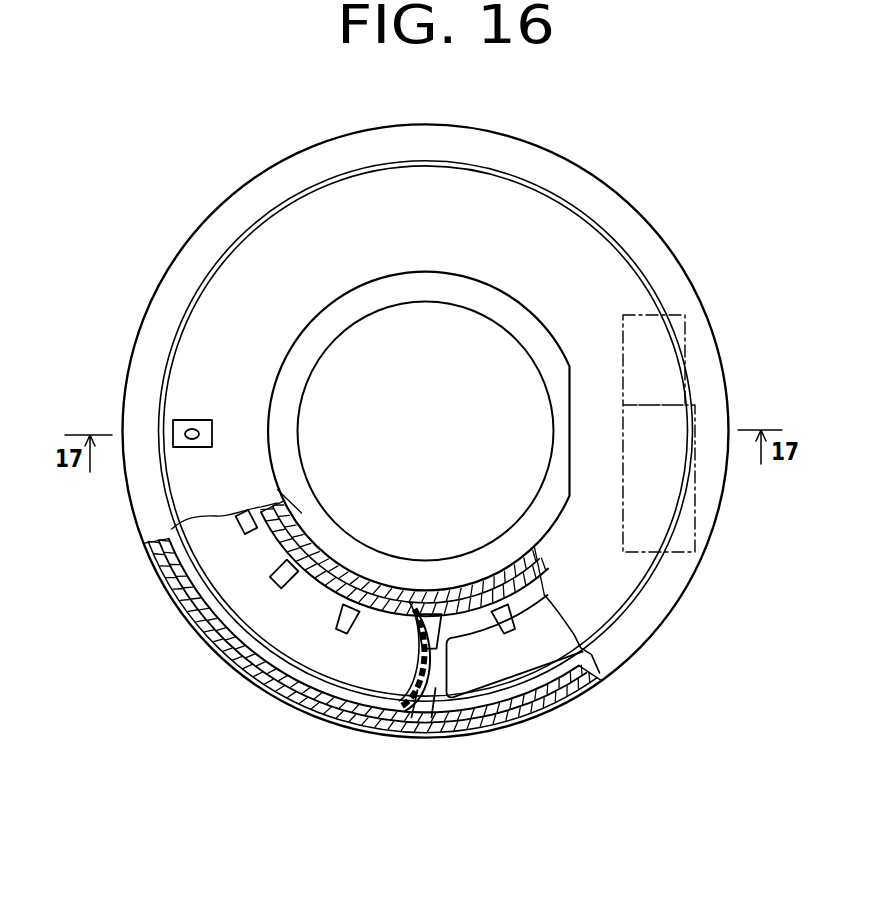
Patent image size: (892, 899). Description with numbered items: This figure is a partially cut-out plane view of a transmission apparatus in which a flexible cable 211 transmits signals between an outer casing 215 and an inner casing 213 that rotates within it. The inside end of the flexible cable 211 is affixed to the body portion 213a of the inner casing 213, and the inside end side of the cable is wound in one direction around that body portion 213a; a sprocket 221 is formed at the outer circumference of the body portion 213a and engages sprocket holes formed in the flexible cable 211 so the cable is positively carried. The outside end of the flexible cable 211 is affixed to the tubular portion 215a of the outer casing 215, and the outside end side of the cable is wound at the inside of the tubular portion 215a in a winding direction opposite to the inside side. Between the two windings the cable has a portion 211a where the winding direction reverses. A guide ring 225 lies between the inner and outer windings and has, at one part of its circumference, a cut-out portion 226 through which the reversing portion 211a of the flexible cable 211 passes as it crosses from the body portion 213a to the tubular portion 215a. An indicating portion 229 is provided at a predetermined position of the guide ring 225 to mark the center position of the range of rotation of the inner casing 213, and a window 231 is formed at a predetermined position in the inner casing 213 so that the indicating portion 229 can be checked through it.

The flexible cable 211 is at (572, 706).
The portion where the winding direction reverses 211a is at (410, 725).
The inner casing 213 is at (455, 552).
The body portion 213a is at (316, 530).
The outer casing 215 is at (128, 516).
The tubular portion 215a is at (173, 597).
The sprocket 221 is at (240, 535).
The guide ring 225 is at (363, 677).
The cut-out portion 226 is at (452, 733).
The indicating portion 229 is at (192, 420).
The window 231 is at (173, 434).